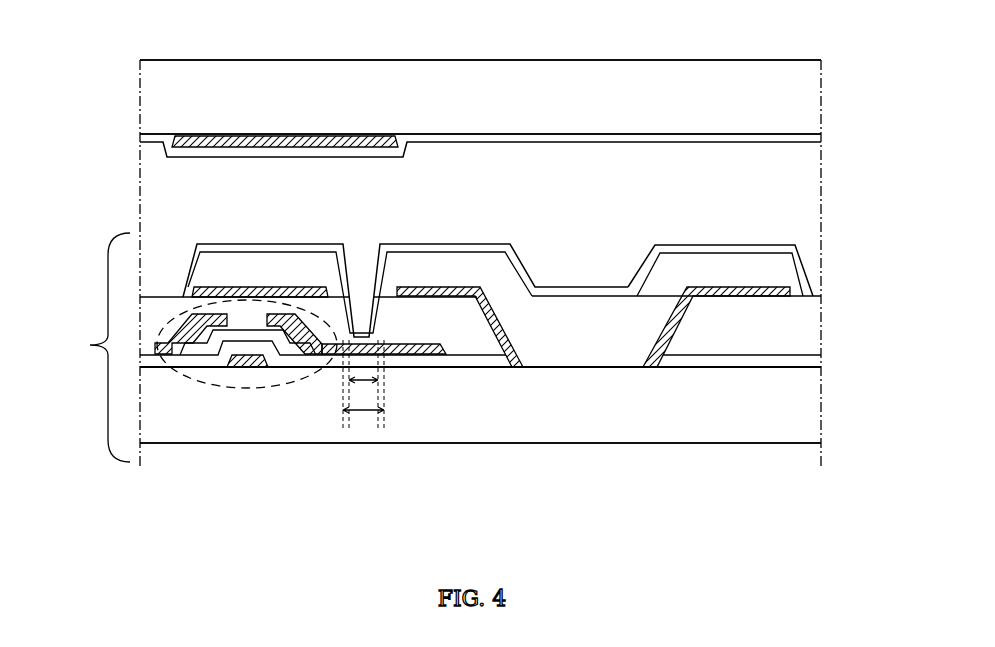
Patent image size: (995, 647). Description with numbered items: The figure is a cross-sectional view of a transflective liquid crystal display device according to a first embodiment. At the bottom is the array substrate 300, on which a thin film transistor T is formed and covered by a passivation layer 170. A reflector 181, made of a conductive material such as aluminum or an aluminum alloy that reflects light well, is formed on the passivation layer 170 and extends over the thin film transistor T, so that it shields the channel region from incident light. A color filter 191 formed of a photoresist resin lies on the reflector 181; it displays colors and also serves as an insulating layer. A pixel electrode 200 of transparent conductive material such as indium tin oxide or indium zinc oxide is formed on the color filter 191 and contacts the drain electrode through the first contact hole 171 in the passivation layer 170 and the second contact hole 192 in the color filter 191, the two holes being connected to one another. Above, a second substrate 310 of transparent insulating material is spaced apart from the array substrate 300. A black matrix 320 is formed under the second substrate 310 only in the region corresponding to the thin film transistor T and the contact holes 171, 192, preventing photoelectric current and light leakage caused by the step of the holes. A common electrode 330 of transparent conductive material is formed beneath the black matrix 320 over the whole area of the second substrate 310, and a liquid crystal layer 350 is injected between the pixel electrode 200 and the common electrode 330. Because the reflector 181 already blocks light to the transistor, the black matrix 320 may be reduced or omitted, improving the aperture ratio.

The second substrate 310 is at (467, 75).
The black matrix 320 is at (293, 137).
The common electrode 330 is at (605, 137).
The liquid crystal layer 350 is at (805, 197).
The array substrate 300 is at (432, 347).
The passivation layer 170 is at (163, 303).
The reflector 181 is at (252, 288).
The color filter 191 is at (308, 262).
The pixel electrode 200 is at (675, 245).
The first contact hole 171 is at (384, 384).
The second contact hole 192 is at (363, 389).
The thin film transistor T is at (247, 388).